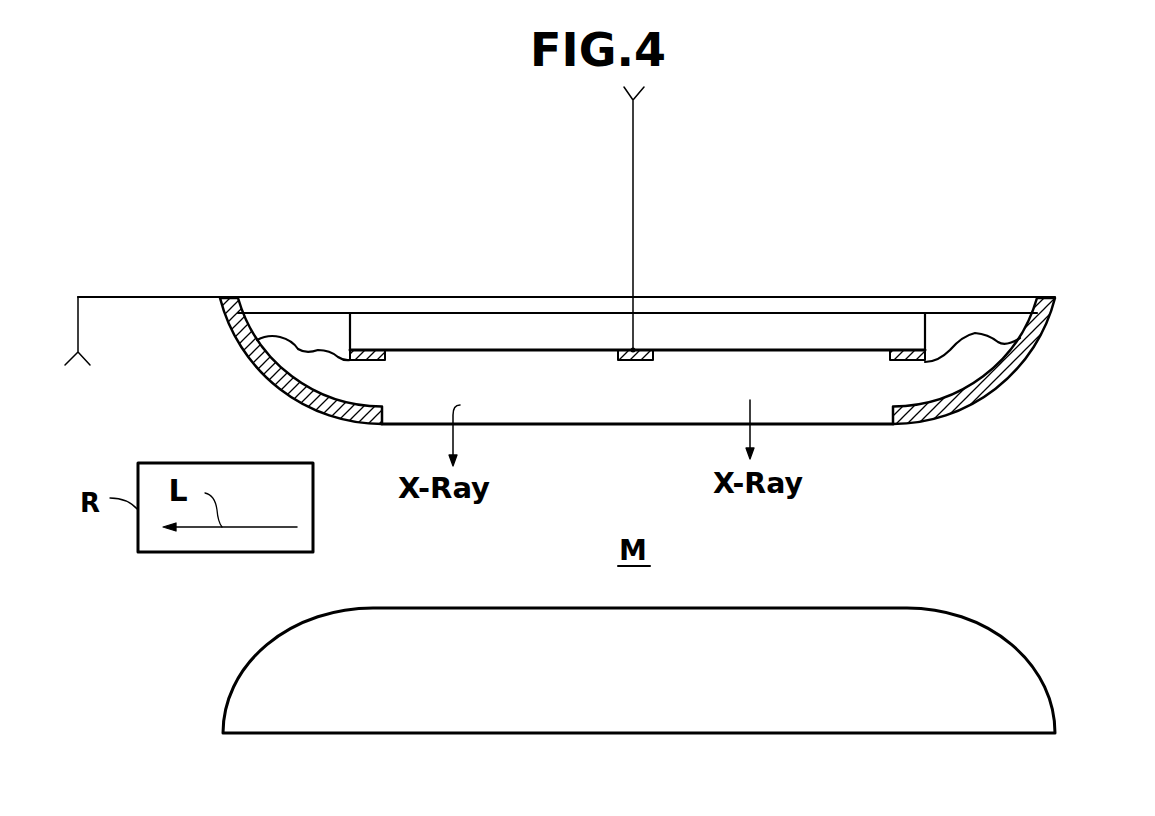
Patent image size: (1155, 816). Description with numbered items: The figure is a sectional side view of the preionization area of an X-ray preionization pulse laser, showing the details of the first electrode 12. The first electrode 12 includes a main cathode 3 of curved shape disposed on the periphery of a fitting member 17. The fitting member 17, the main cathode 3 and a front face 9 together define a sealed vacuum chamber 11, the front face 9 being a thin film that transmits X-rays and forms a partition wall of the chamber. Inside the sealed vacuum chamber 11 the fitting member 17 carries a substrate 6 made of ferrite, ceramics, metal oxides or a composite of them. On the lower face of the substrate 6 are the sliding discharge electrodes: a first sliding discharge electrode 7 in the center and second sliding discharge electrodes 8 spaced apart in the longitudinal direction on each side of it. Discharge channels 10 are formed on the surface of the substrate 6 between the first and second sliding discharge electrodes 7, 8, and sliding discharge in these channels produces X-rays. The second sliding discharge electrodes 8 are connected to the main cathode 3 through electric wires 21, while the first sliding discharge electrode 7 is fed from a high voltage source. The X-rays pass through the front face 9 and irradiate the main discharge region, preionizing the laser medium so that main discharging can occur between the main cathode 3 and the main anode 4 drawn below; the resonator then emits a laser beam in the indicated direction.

The main cathode 3 is at (256, 348).
The main anode 4 is at (262, 658).
The substrate 6 is at (502, 333).
The first sliding discharge electrode 7 is at (632, 362).
The second sliding discharge electrodes 8 is at (365, 362).
The front face 9 is at (538, 425).
The discharge channels 10 is at (455, 351).
The sealed vacuum chamber 11 is at (807, 373).
The first electrode 12 is at (1021, 385).
The fitting member 17 is at (868, 303).
The electric wires 21 is at (292, 345).